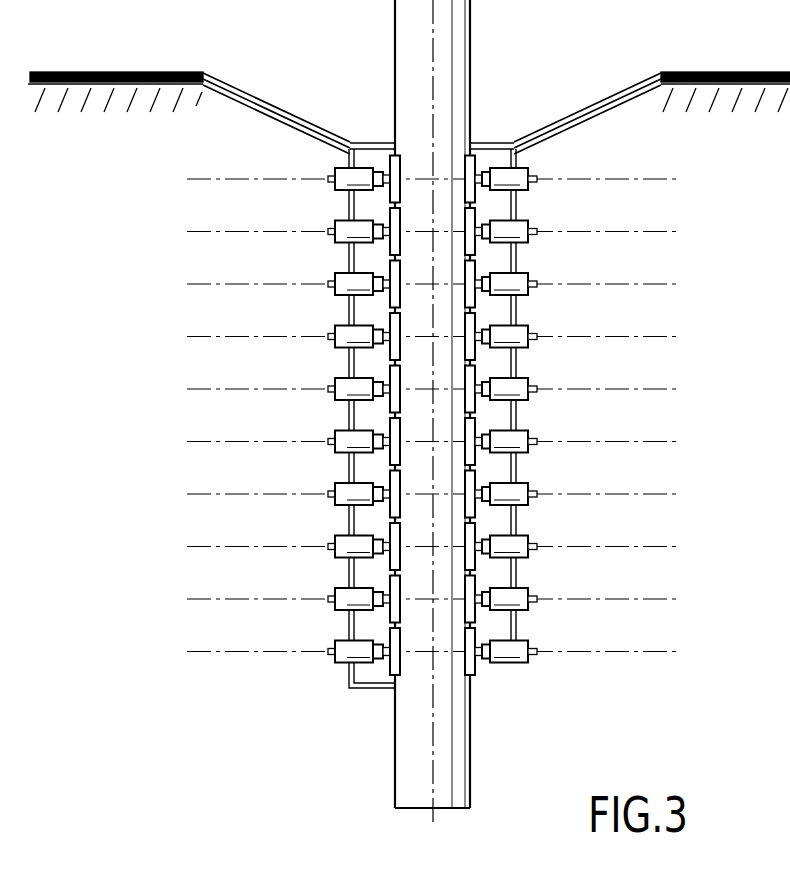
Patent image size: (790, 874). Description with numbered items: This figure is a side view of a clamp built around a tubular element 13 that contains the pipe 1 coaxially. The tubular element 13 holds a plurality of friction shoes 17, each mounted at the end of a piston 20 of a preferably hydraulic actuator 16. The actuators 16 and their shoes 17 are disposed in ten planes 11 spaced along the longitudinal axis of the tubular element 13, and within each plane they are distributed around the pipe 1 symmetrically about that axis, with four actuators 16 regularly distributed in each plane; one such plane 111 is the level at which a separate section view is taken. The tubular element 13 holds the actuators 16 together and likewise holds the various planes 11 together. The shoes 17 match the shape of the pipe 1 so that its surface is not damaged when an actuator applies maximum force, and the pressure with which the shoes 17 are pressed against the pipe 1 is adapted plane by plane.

The pipe 1 is at (470, 20).
The planes 11 is at (187, 389).
The plane 111 is at (665, 178).
The tubular element 13 is at (515, 308).
The actuator 16 is at (525, 218).
The friction shoe 17 is at (390, 267).
The piston 20 is at (490, 246).